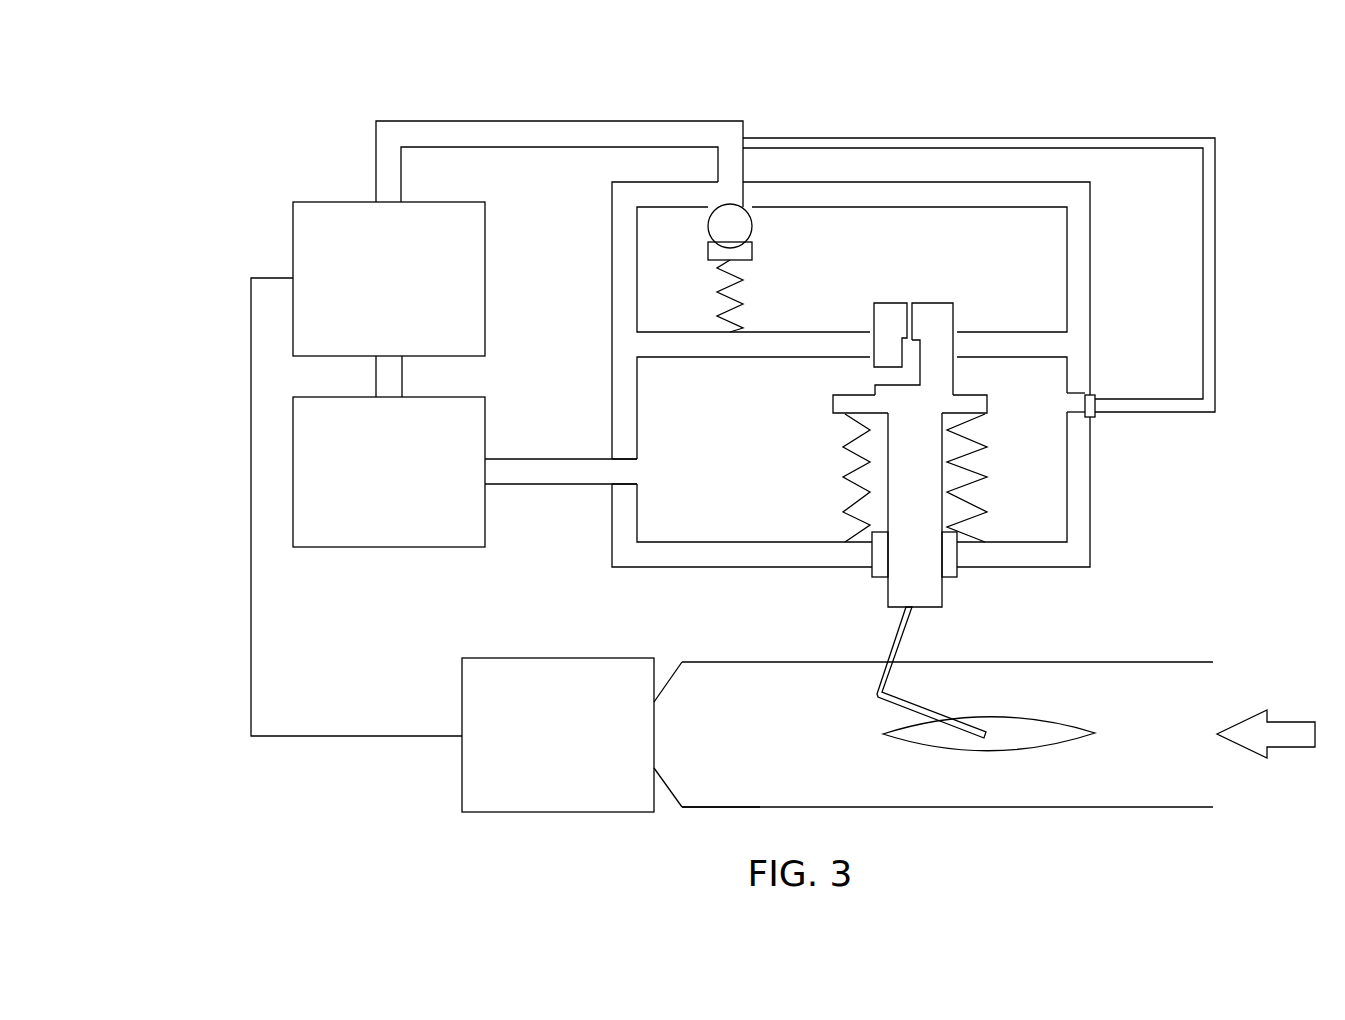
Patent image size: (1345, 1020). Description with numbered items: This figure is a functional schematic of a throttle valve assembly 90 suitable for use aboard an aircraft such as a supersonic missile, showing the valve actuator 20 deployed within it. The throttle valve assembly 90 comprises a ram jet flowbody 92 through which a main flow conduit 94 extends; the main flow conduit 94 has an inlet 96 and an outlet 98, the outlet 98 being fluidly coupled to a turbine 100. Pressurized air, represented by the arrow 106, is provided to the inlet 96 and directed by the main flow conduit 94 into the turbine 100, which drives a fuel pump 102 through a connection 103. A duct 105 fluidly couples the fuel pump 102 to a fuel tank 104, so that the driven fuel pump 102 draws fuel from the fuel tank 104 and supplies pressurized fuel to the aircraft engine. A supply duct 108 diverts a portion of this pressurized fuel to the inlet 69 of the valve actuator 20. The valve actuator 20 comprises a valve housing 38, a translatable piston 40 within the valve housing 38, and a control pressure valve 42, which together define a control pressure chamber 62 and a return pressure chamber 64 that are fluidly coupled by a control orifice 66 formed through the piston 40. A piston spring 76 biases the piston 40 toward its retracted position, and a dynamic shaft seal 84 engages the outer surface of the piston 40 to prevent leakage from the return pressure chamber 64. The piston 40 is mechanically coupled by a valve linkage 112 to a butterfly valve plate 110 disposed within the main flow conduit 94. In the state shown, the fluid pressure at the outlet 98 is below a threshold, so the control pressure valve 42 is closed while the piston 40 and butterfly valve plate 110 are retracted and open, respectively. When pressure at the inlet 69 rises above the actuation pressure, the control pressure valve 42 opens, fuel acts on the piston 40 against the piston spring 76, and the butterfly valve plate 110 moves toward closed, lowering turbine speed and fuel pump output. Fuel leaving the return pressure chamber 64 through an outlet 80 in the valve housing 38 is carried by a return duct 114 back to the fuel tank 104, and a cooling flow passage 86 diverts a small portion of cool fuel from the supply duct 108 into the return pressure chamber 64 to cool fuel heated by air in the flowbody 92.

The valve actuator 20 is at (1272, 115).
The valve housing 38 is at (1087, 497).
The piston 40 is at (943, 603).
The control pressure valve 42 is at (786, 256).
The control pressure chamber 62 is at (1023, 241).
The return pressure chamber 64 is at (657, 396).
The control orifice 66 is at (912, 303).
The inlet 69 is at (720, 205).
The piston spring 76 is at (985, 468).
The outlet 80 is at (638, 472).
The dynamic shaft seal 84 is at (832, 405).
The cooling flow passage 86 is at (999, 138).
The throttle valve assembly 90 is at (336, 800).
The ram jet flowbody 92 is at (975, 808).
The main flow conduit 94 is at (745, 807).
The inlet 96 is at (1168, 695).
The outlet 98 is at (665, 750).
The turbine 100 is at (594, 798).
The fuel pump 102 is at (423, 341).
The connection 103 is at (250, 452).
The fuel tank 104 is at (423, 530).
The duct 105 is at (404, 375).
The arrow 106 is at (1299, 750).
The supply duct 108 is at (557, 121).
The butterfly valve plate 110 is at (1038, 718).
The valve linkage 112 is at (925, 706).
The return duct 114 is at (548, 458).